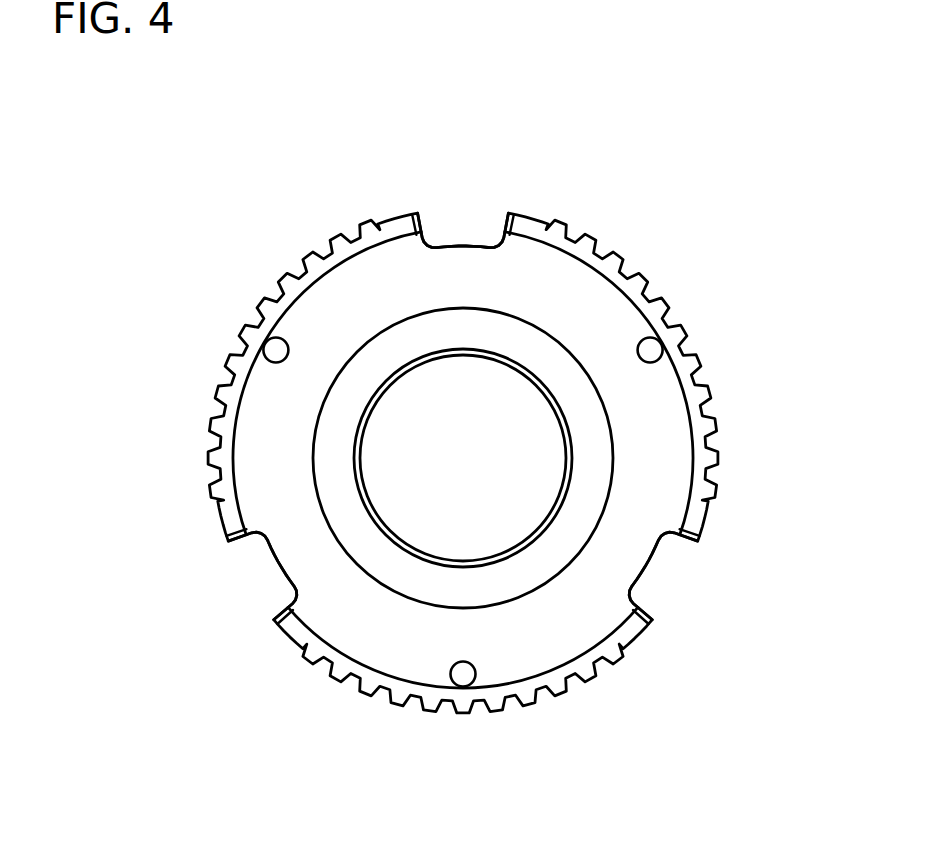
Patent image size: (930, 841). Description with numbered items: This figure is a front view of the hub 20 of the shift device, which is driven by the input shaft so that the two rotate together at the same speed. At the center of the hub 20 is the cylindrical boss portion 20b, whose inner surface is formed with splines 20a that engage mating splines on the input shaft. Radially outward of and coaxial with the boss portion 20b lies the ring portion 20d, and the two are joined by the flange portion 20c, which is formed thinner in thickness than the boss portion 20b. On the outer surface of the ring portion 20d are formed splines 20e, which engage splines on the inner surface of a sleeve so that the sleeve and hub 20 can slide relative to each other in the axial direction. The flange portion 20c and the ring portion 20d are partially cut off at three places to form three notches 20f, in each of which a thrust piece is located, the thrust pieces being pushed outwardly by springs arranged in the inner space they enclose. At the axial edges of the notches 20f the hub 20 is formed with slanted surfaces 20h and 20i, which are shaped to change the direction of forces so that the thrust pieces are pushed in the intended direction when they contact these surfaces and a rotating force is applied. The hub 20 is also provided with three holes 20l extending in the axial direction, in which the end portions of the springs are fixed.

The hub 20 is at (332, 228).
The splines 20a is at (498, 362).
The boss portion 20b is at (388, 557).
The flange portion 20c is at (600, 313).
The ring portion 20d is at (270, 313).
The splines 20e is at (297, 273).
The notches 20f is at (468, 227).
The slanted surface 20h is at (420, 211).
The slanted surface 20i is at (516, 212).
The holes 20l is at (662, 357).